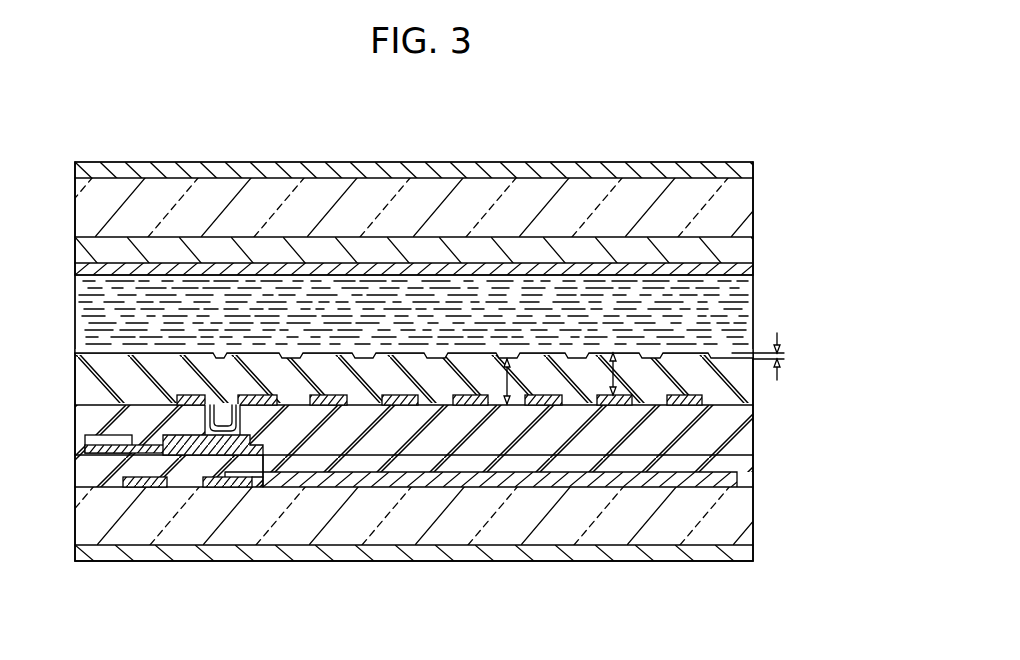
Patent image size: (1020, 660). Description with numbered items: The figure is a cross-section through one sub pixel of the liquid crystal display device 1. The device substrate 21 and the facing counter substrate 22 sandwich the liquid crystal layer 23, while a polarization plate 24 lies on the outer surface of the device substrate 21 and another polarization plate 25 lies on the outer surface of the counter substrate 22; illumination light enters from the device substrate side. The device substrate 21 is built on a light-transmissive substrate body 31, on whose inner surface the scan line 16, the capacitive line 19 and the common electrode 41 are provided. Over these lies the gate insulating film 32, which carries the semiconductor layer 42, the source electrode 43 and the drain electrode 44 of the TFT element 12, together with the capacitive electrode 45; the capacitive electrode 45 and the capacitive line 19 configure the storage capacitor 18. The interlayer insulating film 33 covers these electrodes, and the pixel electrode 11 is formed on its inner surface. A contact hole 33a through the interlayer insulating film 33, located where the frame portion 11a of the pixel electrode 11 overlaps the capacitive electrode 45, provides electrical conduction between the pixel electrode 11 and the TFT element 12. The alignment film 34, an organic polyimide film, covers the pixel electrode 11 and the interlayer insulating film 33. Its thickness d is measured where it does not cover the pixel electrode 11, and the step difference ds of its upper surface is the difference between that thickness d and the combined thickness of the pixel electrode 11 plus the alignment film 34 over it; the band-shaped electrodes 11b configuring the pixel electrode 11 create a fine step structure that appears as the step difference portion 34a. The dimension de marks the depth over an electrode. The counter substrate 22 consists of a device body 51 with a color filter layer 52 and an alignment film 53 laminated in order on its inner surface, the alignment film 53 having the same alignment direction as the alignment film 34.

The liquid crystal display device 1 is at (684, 113).
The pixel electrode 11 is at (439, 241).
The frame portion 11a is at (257, 395).
The band-shaped electrodes 11b is at (400, 395).
The TFT element 12 is at (204, 547).
The scan line 16 is at (217, 455).
The storage capacitor 18 is at (272, 465).
The capacitive line 19 is at (265, 458).
The device substrate 21 is at (67, 548).
The counter substrate 22 is at (67, 276).
The liquid crystal layer 23 is at (67, 352).
The polarization plate 24 is at (755, 554).
The polarization plate 25 is at (755, 172).
The substrate body 31 is at (755, 512).
The gate insulating film 32 is at (755, 470).
The interlayer insulating film 33 is at (755, 432).
The contact hole 33a is at (224, 426).
The alignment film 34 is at (755, 390).
The step difference portion 34a is at (200, 395).
The common electrode 41 is at (450, 480).
The semiconductor layer 42 is at (140, 453).
The source electrode 43 is at (103, 452).
The drain electrode 44 is at (170, 455).
The capacitive electrode 45 is at (233, 455).
The device body 51 is at (755, 210).
The color filter layer 52 is at (755, 248).
The alignment film 53 is at (755, 270).
The step difference ds is at (781, 357).
The thickness d is at (516, 381).
The electrode depth de is at (630, 374).